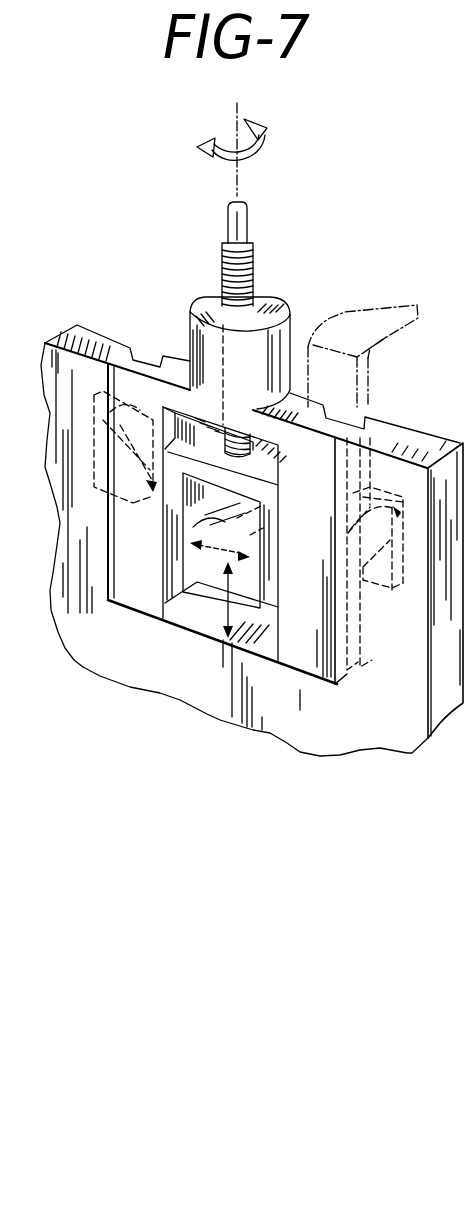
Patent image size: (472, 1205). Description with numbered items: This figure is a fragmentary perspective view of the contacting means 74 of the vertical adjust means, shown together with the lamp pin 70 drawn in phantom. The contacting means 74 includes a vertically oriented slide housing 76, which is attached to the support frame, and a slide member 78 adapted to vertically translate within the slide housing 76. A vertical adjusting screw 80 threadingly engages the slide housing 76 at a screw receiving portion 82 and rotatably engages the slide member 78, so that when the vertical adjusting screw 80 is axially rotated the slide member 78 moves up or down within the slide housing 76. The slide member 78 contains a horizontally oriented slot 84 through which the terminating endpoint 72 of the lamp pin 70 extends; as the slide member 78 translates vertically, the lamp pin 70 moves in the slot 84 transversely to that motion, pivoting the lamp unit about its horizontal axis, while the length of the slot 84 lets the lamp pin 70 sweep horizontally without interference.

The lamp pin 70 is at (373, 320).
The terminating endpoint 72 is at (212, 512).
The contacting means 74 is at (93, 122).
The slide housing 76 is at (303, 632).
The slide member 78 is at (215, 562).
The vertical adjusting screw 80 is at (235, 225).
The screw receiving portion 82 is at (213, 298).
The horizontally oriented slot 84 is at (218, 494).